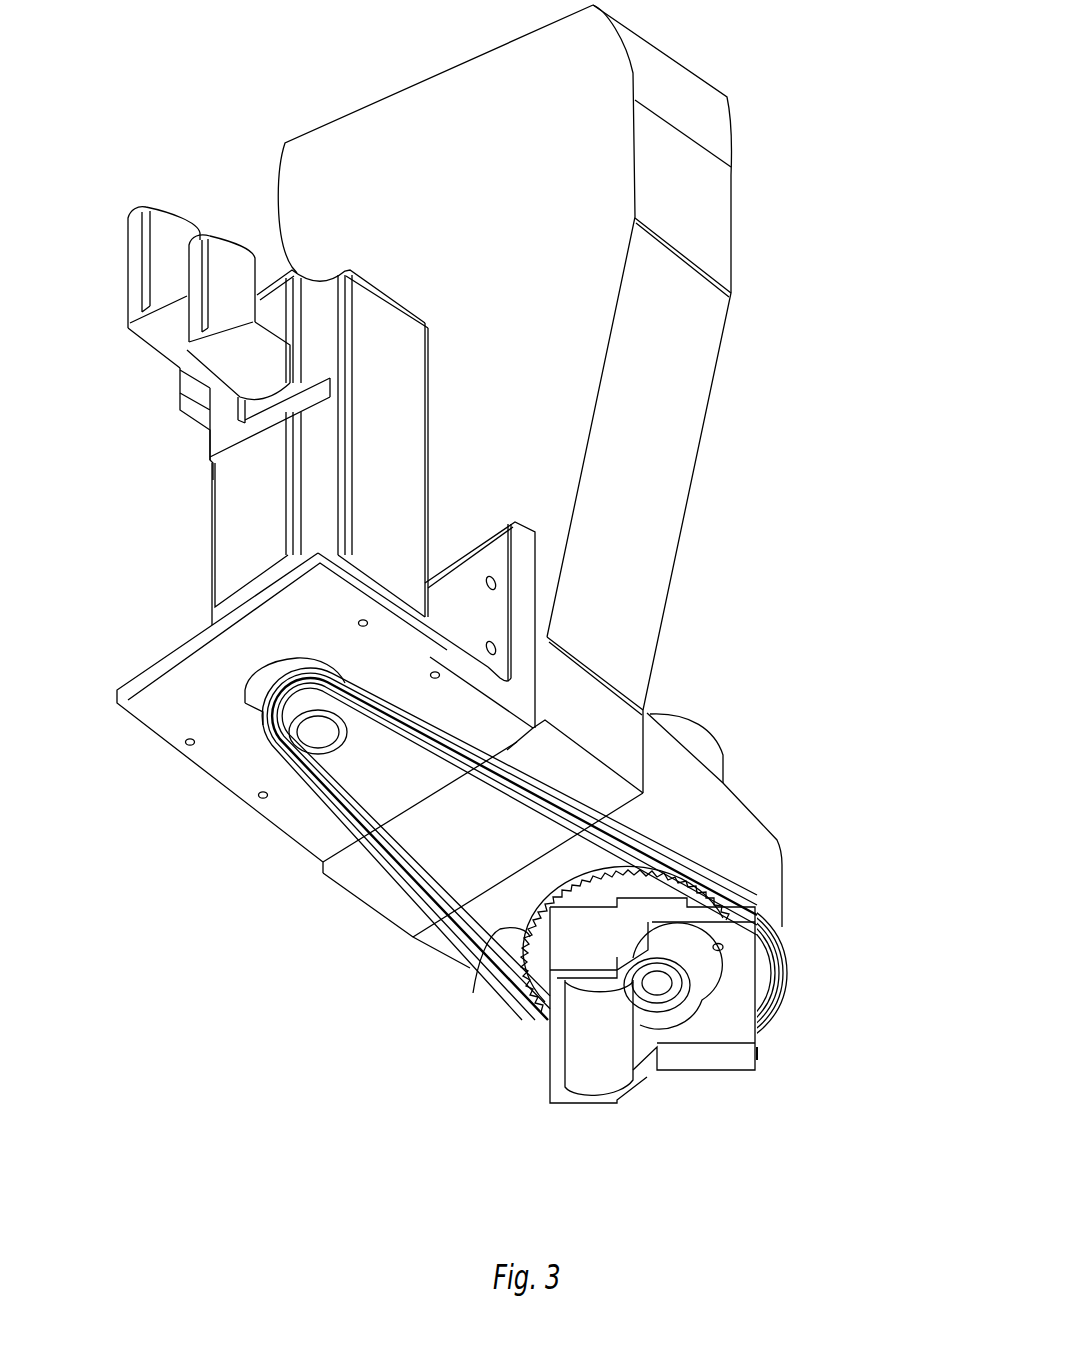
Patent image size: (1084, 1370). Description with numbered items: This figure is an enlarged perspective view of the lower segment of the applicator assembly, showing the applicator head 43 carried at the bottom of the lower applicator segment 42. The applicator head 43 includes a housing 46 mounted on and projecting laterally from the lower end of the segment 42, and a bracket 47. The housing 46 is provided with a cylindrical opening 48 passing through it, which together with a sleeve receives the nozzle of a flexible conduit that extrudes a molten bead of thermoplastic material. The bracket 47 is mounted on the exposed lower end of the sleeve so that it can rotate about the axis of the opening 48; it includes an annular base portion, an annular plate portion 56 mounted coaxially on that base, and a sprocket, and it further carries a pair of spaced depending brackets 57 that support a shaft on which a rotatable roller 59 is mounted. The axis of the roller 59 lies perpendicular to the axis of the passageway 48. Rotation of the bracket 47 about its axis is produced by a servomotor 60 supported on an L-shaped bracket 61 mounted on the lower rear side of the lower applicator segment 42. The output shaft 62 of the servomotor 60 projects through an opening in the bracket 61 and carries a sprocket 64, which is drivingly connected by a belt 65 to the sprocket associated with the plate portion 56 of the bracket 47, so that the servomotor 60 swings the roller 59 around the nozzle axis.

The lower applicator segment 42 is at (706, 398).
The applicator head 43 is at (825, 808).
The housing 46 is at (783, 887).
The bracket 47 is at (760, 1050).
The cylindrical opening 48 is at (657, 985).
The annular plate portion 56 is at (490, 927).
The depending brackets 57 is at (515, 992).
The rotatable roller 59 is at (628, 1084).
The servomotor 60 is at (215, 508).
The L-shaped bracket 61 is at (520, 572).
The output shaft 62 is at (312, 739).
The sprocket 64 is at (347, 742).
The belt 65 is at (413, 937).